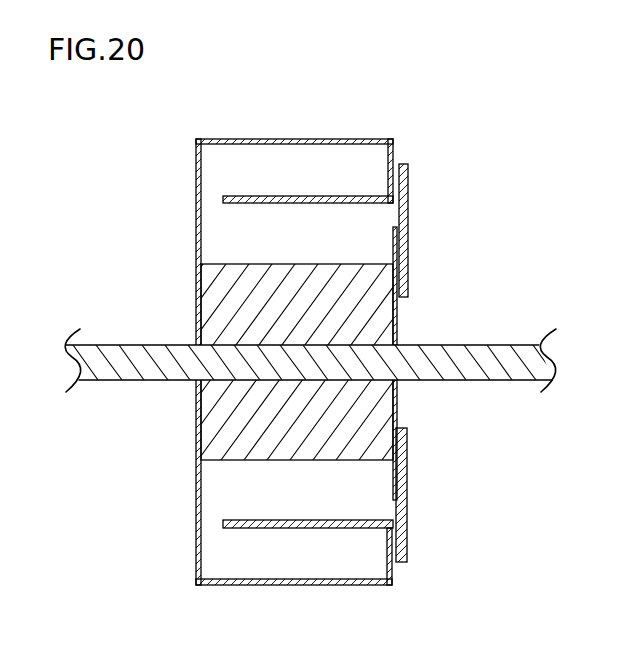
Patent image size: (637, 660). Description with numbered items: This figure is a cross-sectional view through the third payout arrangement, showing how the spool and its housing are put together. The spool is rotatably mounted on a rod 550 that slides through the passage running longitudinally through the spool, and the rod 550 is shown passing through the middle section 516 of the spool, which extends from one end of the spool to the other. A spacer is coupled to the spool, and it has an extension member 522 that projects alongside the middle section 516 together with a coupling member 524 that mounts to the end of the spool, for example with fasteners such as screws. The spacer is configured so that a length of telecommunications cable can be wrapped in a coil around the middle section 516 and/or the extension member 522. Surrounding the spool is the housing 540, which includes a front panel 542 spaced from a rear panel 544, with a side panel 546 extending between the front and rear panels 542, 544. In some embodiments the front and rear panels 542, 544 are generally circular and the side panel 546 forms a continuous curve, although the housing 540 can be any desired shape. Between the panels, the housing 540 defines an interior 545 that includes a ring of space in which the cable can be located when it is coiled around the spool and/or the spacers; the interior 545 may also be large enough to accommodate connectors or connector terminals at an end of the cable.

The middle section 516 is at (283, 263).
The extension member 522 is at (283, 195).
The coupling member 524 is at (408, 190).
The housing 540 is at (313, 334).
The front panel 542 is at (392, 572).
The rear panel 544 is at (198, 193).
The interior 545 is at (238, 554).
The side panel 546 is at (226, 140).
The rod 550 is at (477, 346).